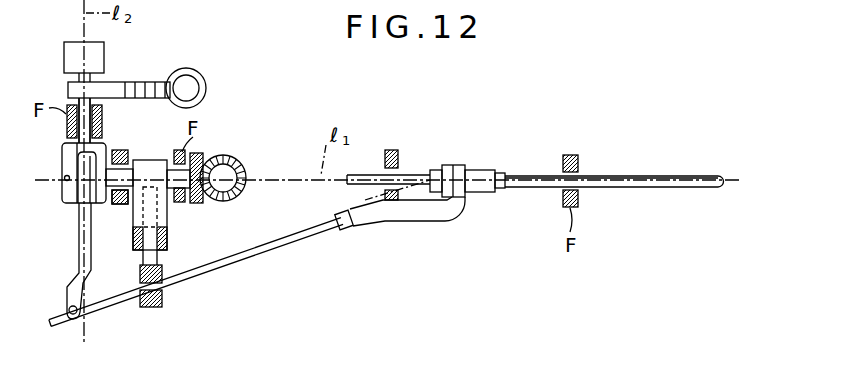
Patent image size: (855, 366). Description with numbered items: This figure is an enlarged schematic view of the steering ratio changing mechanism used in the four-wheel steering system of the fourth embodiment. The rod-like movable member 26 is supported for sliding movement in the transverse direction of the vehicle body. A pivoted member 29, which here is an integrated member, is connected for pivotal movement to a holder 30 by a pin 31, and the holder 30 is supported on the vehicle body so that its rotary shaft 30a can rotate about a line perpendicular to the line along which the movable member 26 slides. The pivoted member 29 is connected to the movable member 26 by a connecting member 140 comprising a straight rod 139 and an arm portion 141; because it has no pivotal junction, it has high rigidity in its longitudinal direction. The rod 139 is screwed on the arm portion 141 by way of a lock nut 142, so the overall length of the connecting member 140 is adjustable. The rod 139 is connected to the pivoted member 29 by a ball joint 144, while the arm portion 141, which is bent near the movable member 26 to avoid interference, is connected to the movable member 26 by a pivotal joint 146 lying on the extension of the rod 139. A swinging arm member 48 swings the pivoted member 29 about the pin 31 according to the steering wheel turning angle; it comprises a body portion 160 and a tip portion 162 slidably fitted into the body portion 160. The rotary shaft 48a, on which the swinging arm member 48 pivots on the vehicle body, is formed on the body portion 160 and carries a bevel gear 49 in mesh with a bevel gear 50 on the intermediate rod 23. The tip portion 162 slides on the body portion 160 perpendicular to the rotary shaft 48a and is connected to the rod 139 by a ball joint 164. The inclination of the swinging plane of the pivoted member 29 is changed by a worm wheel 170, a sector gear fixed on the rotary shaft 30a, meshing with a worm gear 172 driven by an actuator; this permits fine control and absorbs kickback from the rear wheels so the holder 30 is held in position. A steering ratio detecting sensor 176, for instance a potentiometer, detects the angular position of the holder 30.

The steering ratio detecting sensor 176 is at (71, 42).
The worm wheel 170 is at (138, 81).
The worm gear 172 is at (196, 69).
The rotary shaft 30a is at (91, 129).
The holder 30 is at (63, 160).
The pin 31 is at (63, 190).
The pivoted member 29 is at (78, 236).
The ball joint 144 is at (87, 321).
The swinging arm member 48 is at (157, 212).
The rotary shaft 48a is at (127, 201).
The body portion 160 is at (167, 212).
The tip portion 162 is at (140, 277).
The ball joint 164 is at (152, 308).
The bevel gear 49 is at (204, 153).
The bevel gear 50 is at (241, 160).
The intermediate rod 23 is at (245, 190).
The connecting member 140 is at (257, 266).
The rod 139 is at (185, 280).
The lock nut 142 is at (340, 230).
The arm portion 141 is at (404, 222).
The pivotal joint 146 is at (457, 165).
The movable member 26 is at (622, 176).